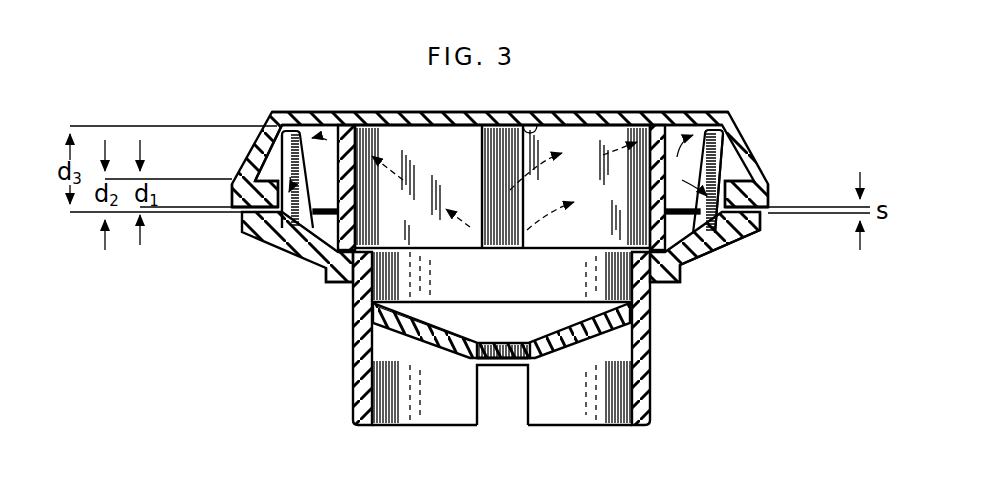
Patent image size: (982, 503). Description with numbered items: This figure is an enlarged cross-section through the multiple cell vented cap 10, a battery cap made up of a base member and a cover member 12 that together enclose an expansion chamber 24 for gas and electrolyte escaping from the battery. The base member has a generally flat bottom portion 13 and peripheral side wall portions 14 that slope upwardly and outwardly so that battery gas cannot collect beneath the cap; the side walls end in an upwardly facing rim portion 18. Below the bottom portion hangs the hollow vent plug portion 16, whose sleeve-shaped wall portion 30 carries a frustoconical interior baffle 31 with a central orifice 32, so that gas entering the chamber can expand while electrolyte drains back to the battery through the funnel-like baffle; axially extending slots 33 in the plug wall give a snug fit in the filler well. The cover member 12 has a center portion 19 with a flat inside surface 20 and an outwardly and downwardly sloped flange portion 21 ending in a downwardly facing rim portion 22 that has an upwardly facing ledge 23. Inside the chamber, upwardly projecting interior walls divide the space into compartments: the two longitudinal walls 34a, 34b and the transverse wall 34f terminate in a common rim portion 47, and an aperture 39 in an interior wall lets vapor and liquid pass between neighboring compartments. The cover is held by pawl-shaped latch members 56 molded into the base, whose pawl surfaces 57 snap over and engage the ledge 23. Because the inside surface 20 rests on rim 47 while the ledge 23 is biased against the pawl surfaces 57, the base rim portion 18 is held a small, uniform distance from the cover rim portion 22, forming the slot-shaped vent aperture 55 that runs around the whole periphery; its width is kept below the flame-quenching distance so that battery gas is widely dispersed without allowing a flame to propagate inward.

The multiple cell vented cap 10 is at (296, 98).
The cover member 12 is at (660, 98).
The bottom portion 13 is at (325, 268).
The peripheral side wall portions 14 is at (280, 237).
The vent plug portion 16 is at (593, 417).
The rim portion 18 is at (231, 194).
The center portion 19 is at (410, 111).
The inside surface 20 is at (530, 124).
The flange portion 21 is at (662, 168).
The rim portion 22 is at (753, 215).
The ledge 23 is at (768, 178).
The expansion chamber 24 is at (418, 275).
The wall portion 30 is at (360, 370).
The interior baffle 31 is at (430, 340).
The orifice 32 is at (523, 360).
The slots 33 is at (482, 408).
The longitudinally extending interior wall 34a is at (298, 153).
The longitudinally extending interior wall 34b is at (735, 142).
The transversely extending interior wall 34f is at (442, 183).
The aperture 39 is at (482, 225).
The rim portion 47 is at (343, 111).
The vent aperture 55 is at (233, 214).
The latch members 56 is at (282, 163).
The pawl surfaces 57 is at (243, 183).